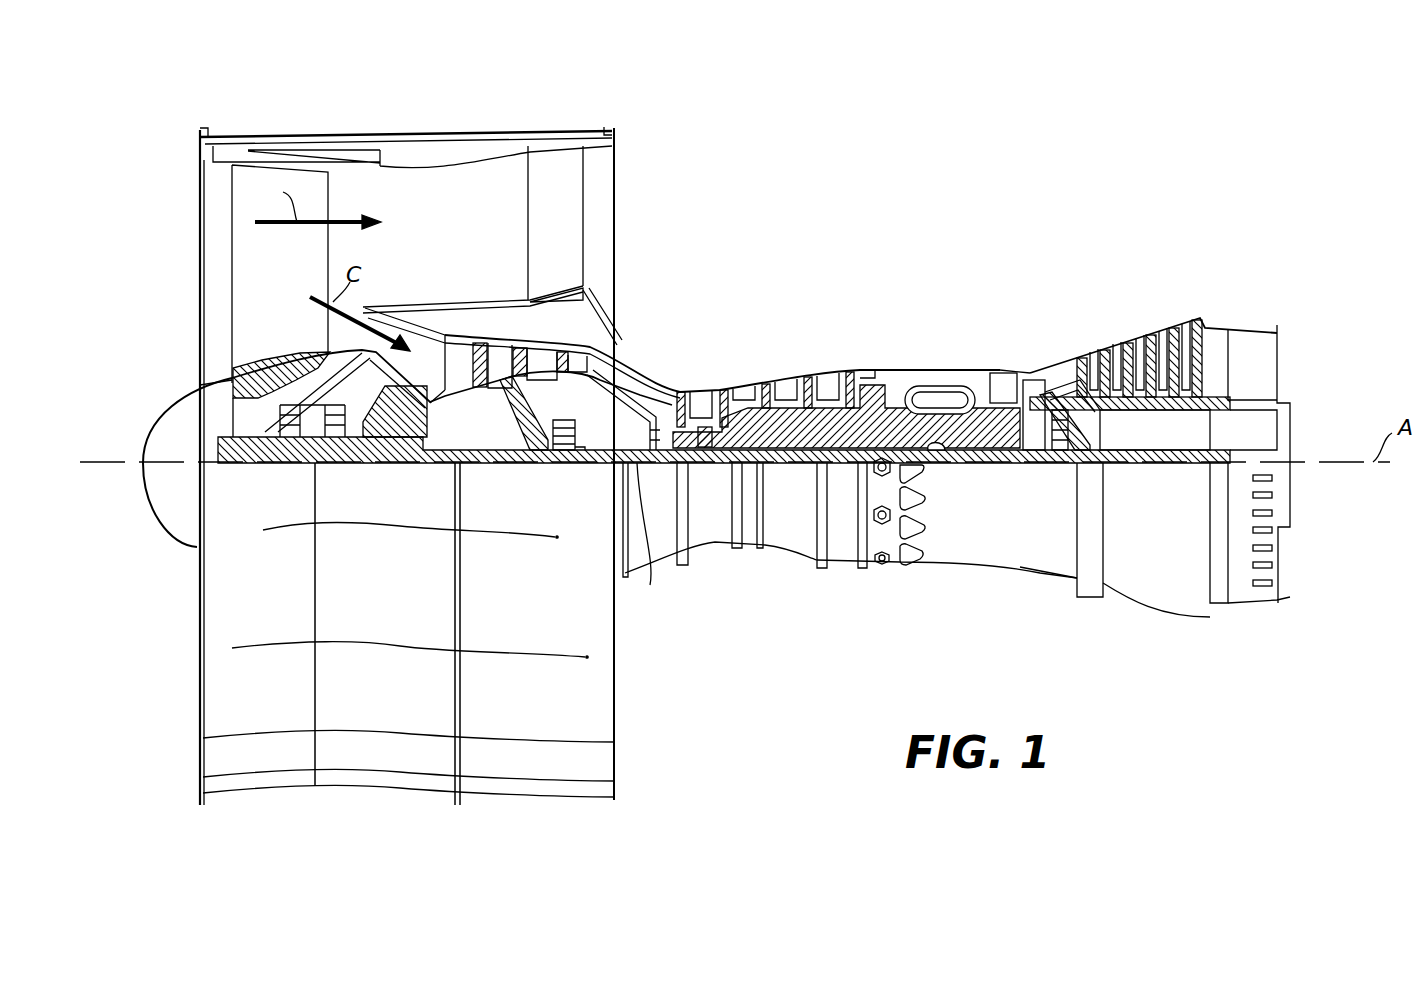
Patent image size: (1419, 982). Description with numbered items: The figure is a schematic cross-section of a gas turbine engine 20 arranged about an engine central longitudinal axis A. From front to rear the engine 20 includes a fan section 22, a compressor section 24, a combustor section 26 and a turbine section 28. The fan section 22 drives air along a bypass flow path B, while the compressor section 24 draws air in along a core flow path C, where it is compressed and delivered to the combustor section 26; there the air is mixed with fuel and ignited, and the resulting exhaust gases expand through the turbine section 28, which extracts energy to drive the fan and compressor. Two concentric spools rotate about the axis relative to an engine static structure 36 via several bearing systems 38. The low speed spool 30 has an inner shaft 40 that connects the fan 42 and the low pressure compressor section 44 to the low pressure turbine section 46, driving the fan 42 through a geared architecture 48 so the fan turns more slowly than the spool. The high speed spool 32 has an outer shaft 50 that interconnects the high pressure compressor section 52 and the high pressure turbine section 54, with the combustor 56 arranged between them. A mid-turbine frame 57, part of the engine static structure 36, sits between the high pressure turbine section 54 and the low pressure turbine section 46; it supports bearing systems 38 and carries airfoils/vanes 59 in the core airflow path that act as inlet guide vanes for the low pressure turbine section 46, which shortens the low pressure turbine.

The gas turbine engine 20 is at (937, 197).
The fan section 22 is at (325, 131).
The compressor section 24 is at (665, 361).
The combustor section 26 is at (928, 345).
The turbine section 28 is at (1094, 302).
The low speed spool 30 is at (795, 466).
The high speed spool 32 is at (838, 423).
The engine static structure 36 is at (843, 561).
The bearing systems 38 is at (565, 440).
The inner shaft 40 is at (638, 470).
The fan 42 is at (318, 230).
The low pressure compressor section 44 is at (535, 360).
The low pressure turbine section 46 is at (1143, 340).
The geared architecture 48 is at (413, 440).
The outer shaft 50 is at (935, 458).
The high pressure compressor section 52 is at (768, 430).
The high pressure turbine section 54 is at (993, 403).
The combustor 56 is at (928, 398).
The mid-turbine frame 57 is at (1050, 361).
The airfoils/vanes 59 is at (1050, 385).